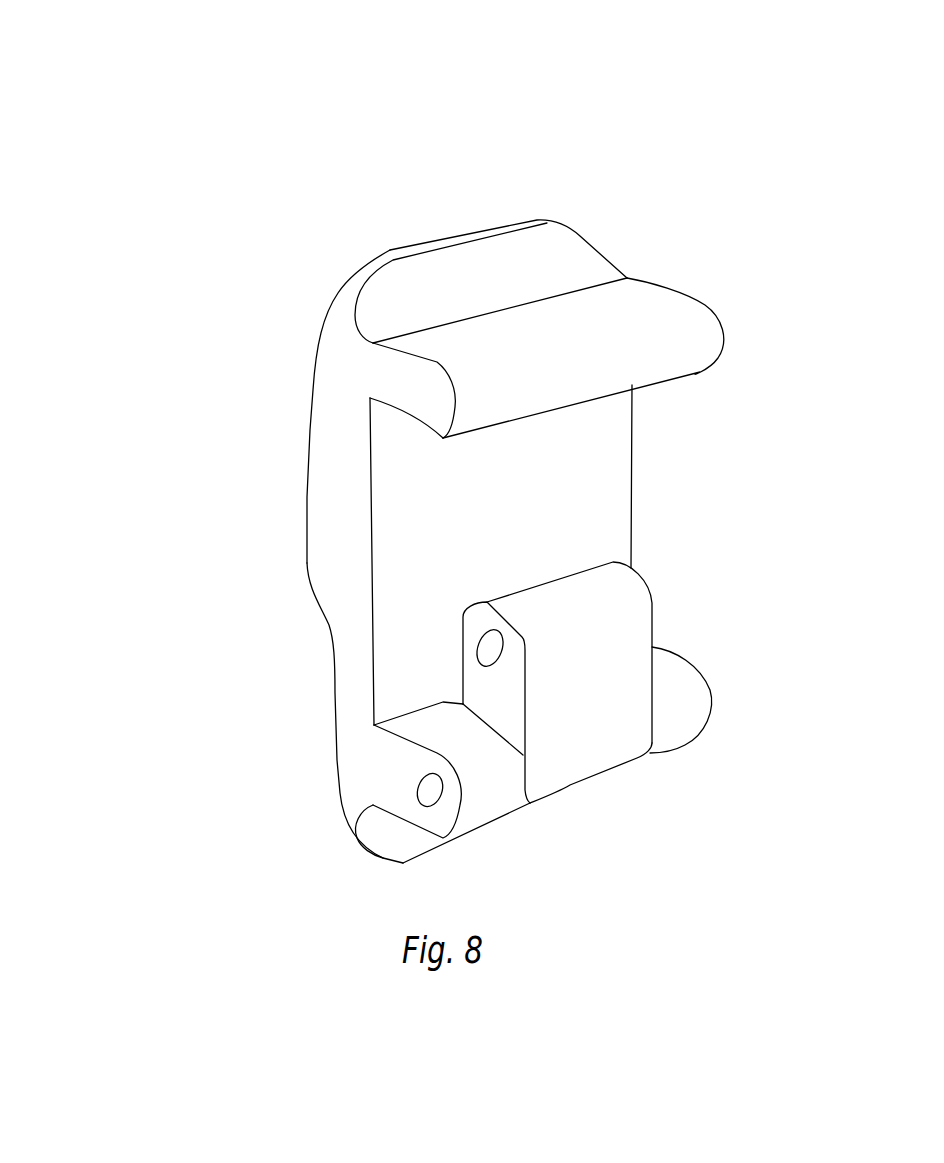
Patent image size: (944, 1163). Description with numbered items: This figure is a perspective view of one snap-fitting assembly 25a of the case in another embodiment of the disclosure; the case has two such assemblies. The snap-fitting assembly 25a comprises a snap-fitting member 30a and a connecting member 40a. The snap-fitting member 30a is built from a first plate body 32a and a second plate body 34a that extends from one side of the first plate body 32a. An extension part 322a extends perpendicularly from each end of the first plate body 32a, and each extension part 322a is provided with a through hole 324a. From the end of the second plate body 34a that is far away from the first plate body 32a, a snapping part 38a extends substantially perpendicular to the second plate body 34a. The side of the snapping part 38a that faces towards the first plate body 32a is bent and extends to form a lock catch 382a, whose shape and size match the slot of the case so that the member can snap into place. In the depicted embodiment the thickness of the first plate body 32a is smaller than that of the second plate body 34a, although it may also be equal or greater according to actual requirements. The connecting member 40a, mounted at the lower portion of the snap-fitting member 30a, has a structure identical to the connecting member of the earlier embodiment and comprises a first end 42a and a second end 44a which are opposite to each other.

The snap-fitting assembly 25a is at (453, 78).
The snap-fitting member 30a is at (253, 470).
The first plate body 32a is at (348, 639).
The second plate body 34a is at (340, 403).
The snapping part 38a is at (513, 333).
The lock catch 382a is at (438, 438).
The extension part 322a is at (493, 778).
The through hole 324a is at (433, 790).
The connecting member 40a is at (602, 670).
The first end 42a is at (587, 585).
The second end 44a is at (595, 738).